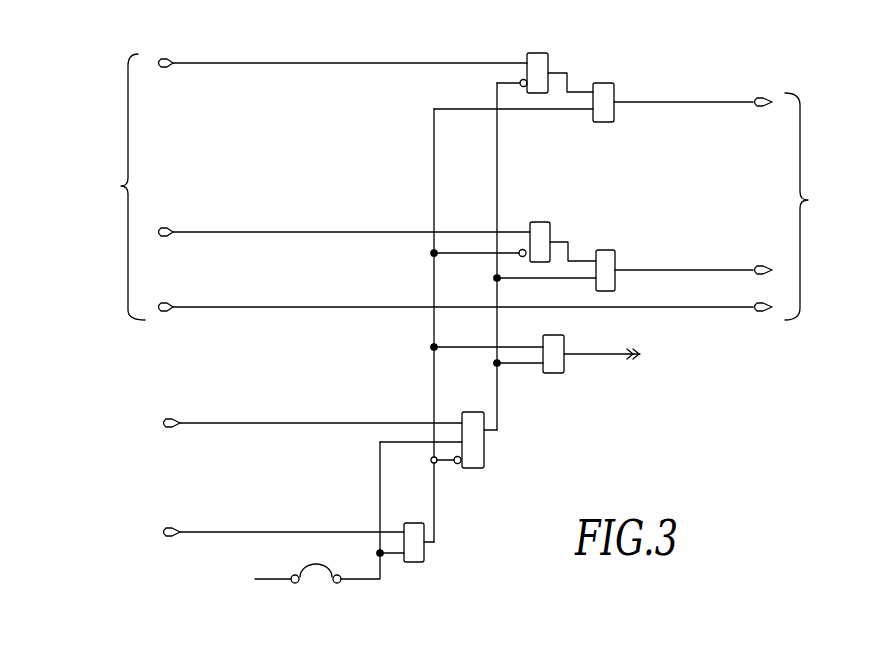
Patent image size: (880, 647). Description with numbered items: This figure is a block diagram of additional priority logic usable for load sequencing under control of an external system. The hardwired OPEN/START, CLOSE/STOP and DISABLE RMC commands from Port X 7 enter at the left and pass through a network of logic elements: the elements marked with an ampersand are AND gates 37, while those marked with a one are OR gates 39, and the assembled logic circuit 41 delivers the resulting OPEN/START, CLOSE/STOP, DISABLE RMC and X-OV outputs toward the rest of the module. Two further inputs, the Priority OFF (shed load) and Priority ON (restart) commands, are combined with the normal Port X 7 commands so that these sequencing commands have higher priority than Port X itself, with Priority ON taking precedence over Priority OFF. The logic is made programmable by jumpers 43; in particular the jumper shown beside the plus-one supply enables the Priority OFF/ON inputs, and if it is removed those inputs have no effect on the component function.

The Port X 7 is at (127, 92).
The AND gate 37 is at (537, 53).
The OR gate 39 is at (603, 83).
The logic circuit 41 is at (741, 436).
The jumper 43 is at (318, 566).